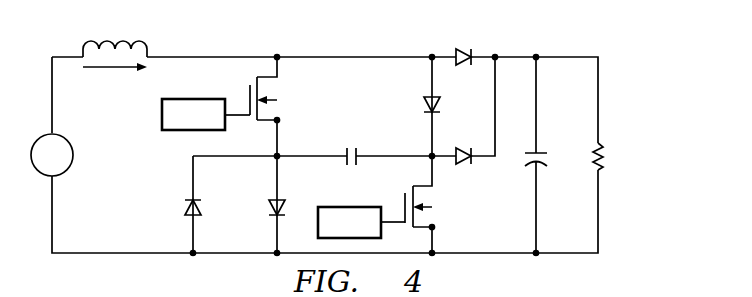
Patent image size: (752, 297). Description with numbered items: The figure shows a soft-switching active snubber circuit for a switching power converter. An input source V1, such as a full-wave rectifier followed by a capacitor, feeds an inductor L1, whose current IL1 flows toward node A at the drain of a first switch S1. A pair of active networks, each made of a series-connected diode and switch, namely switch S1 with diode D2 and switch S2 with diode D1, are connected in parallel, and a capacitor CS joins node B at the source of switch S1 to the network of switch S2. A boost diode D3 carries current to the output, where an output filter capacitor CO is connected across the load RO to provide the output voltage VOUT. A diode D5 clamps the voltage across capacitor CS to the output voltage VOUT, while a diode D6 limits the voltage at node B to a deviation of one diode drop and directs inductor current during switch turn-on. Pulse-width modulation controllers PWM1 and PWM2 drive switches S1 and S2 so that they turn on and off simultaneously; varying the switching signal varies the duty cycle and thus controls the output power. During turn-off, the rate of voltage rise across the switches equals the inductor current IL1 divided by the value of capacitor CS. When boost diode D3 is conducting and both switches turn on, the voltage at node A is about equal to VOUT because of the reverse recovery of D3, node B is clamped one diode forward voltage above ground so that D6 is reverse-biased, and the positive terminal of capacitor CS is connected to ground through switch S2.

The input source V1 is at (64, 146).
The inductor L1 is at (115, 40).
The inductor current IL1 is at (115, 81).
The pulse-width modulation controller PWM1 is at (206, 114).
The switch S1 is at (276, 106).
The node A is at (277, 48).
The node B is at (270, 148).
The capacitor CS is at (396, 148).
The diode D6 is at (180, 206).
The diode D2 is at (264, 206).
The diode D1 is at (419, 106).
The boost diode D3 is at (474, 48).
The diode D5 is at (473, 110).
The pulse-width modulation controller PWM2 is at (361, 222).
The switch S2 is at (430, 206).
The output filter capacitor CO is at (543, 155).
The load RO is at (611, 160).
The output voltage VOUT is at (673, 158).